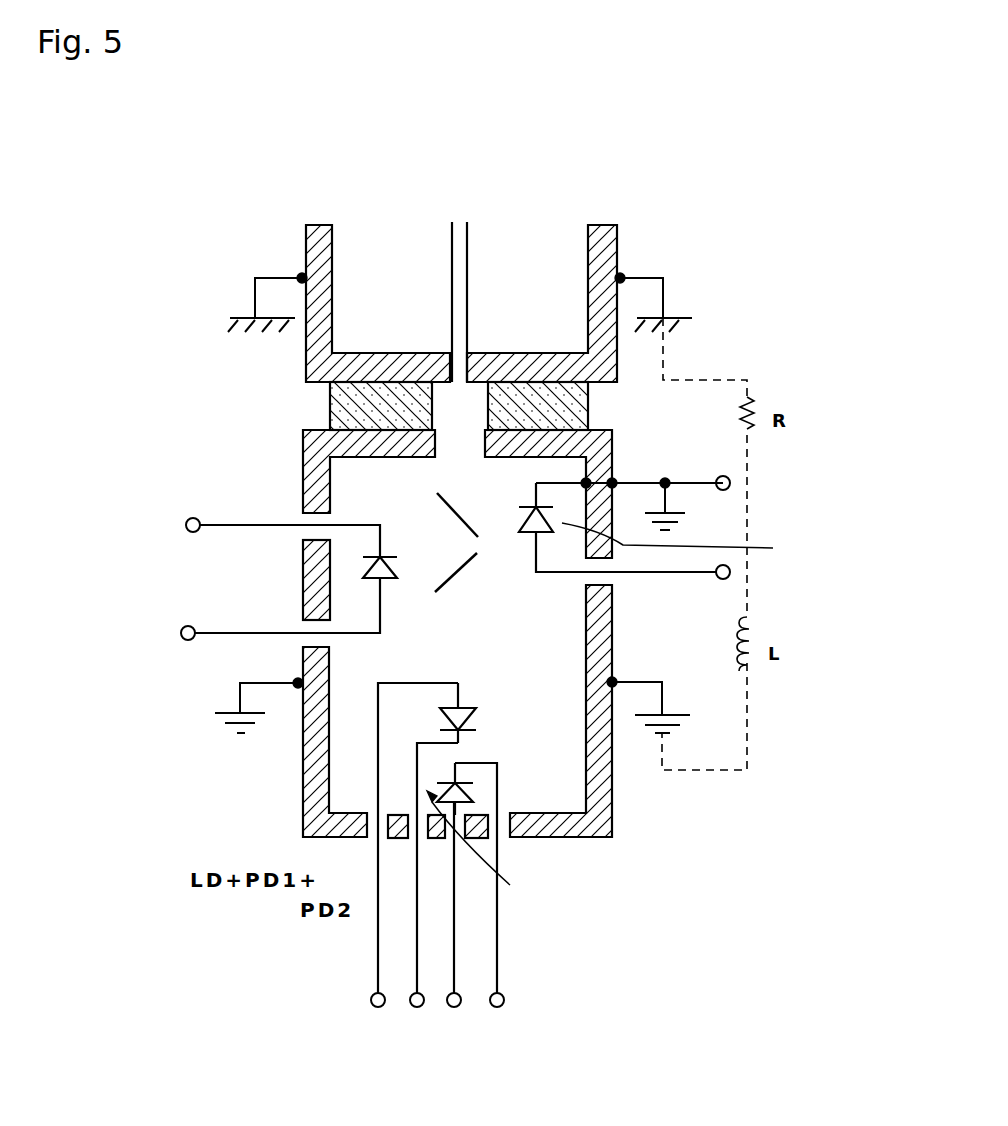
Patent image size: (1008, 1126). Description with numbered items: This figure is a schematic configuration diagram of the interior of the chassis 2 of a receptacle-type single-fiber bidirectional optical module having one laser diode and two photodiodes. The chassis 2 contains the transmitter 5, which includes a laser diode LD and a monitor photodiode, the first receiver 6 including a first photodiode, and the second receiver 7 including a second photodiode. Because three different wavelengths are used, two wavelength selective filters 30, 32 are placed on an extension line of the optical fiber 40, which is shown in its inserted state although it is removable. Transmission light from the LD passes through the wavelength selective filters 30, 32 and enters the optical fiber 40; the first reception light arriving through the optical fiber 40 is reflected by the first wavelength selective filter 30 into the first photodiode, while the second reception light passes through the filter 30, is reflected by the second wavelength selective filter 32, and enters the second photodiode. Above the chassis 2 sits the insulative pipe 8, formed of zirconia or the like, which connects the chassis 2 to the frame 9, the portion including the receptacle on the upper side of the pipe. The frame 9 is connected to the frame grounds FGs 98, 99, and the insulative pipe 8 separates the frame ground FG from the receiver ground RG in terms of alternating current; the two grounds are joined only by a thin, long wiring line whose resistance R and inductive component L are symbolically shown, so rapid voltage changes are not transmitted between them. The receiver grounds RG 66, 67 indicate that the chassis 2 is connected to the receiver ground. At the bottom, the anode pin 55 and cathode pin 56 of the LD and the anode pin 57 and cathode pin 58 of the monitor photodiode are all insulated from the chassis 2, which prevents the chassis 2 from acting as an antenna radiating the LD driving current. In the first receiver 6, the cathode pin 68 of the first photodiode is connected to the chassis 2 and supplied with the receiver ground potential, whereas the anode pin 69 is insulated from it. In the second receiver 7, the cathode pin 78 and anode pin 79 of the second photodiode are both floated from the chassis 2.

The chassis 2 is at (625, 766).
The transmitter 5 is at (448, 874).
The first receiver 6 is at (697, 536).
The second receiver 7 is at (346, 584).
The insulative pipe 8 is at (352, 405).
The frame 9 is at (362, 358).
The first wavelength selective filter 30 is at (448, 515).
The second wavelength selective filter 32 is at (458, 570).
The optical fiber 40 is at (467, 338).
The anode pin of the LD 55 is at (409, 862).
The cathode pin of the LD 56 is at (430, 892).
The anode pin of the MPD 57 is at (454, 922).
The cathode pin of the MPD 58 is at (479, 902).
The receiver ground RG 66 is at (252, 726).
The receiver ground RG 67 is at (668, 720).
The cathode pin of the PD1 68 is at (690, 490).
The anode pin of the PD 69 is at (717, 584).
The cathode pin of the PD2 78 is at (188, 518).
The anode pin of the PD2 79 is at (173, 639).
The frame ground FG 98 is at (258, 302).
The frame ground FG 99 is at (661, 302).